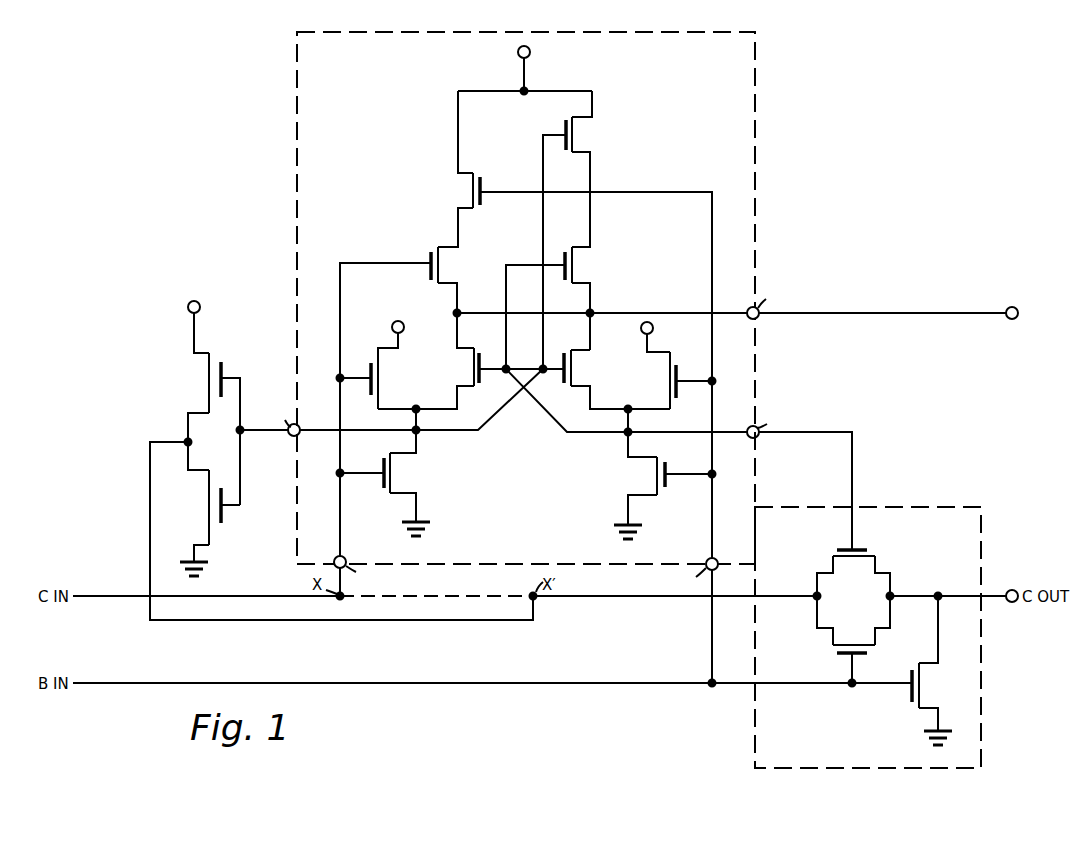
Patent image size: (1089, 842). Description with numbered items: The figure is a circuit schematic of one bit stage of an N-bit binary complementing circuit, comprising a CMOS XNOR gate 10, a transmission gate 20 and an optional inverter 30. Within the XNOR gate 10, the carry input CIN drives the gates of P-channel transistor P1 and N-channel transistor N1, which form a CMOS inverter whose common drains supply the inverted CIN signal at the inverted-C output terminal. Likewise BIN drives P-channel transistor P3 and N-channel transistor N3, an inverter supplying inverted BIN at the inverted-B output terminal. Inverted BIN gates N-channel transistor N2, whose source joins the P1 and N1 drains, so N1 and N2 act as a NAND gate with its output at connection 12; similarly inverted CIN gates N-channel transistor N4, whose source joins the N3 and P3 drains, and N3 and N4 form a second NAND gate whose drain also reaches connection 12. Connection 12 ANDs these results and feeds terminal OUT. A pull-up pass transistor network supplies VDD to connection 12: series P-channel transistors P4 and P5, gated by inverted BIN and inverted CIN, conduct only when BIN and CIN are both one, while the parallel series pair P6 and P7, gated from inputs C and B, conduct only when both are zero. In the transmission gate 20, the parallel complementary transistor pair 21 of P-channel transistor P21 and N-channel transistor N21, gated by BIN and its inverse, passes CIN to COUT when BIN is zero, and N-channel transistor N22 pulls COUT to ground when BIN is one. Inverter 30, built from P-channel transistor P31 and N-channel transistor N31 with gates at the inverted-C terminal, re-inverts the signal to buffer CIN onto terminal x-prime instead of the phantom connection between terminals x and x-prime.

The CMOS XNOR gate 10 is at (758, 82).
The connection 12 is at (575, 313).
The transmission gate 20 is at (940, 507).
The transmission gate transistor pair 21 is at (863, 610).
The inverter 30 is at (341, 445).
The P-channel MOS transistor P1 is at (384, 340).
The P-channel MOS transistor P3 is at (671, 351).
The P-channel MOS transistor P4 is at (578, 238).
The P-channel MOS transistor P5 is at (570, 122).
The P-channel MOS transistor P6 is at (445, 238).
The P-channel MOS transistor P7 is at (474, 172).
The N-channel MOS transistor N1 is at (391, 494).
The N-channel MOS transistor N2 is at (480, 339).
The N-channel MOS transistor N3 is at (663, 448).
The N-channel MOS transistor N4 is at (577, 341).
The P-channel MOS transistor P31 is at (210, 352).
The N-channel MOS transistor N31 is at (210, 544).
The N-channel MOS transistor N21 is at (872, 553).
The P-channel MOS transistor P21 is at (876, 649).
The N-channel transistor N22 is at (918, 710).